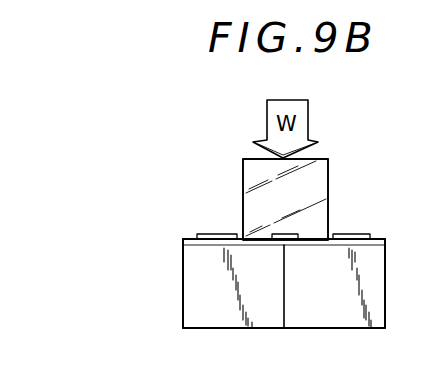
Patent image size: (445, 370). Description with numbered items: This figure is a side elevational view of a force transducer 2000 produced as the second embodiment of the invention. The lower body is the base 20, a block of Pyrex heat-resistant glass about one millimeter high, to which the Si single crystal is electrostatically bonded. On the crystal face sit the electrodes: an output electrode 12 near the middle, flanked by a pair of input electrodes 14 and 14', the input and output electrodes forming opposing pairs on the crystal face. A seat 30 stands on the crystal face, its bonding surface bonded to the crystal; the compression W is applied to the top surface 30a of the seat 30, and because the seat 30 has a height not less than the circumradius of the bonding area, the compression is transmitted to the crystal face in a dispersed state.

The force transducer 2000 is at (175, 231).
The base 20 is at (373, 300).
The input electrode 14' is at (212, 209).
The output electrode 12 is at (291, 238).
The input electrode 14 is at (371, 218).
The seat 30 is at (322, 200).
The top surface of the seat 30a is at (323, 158).